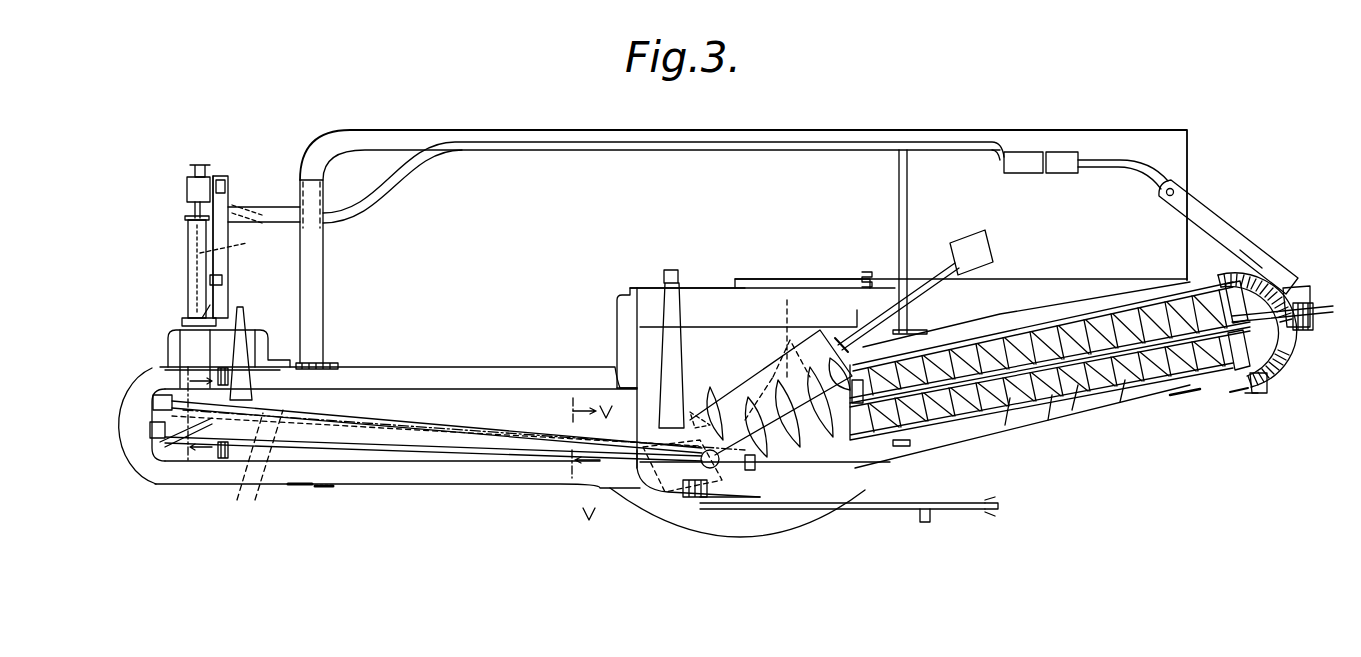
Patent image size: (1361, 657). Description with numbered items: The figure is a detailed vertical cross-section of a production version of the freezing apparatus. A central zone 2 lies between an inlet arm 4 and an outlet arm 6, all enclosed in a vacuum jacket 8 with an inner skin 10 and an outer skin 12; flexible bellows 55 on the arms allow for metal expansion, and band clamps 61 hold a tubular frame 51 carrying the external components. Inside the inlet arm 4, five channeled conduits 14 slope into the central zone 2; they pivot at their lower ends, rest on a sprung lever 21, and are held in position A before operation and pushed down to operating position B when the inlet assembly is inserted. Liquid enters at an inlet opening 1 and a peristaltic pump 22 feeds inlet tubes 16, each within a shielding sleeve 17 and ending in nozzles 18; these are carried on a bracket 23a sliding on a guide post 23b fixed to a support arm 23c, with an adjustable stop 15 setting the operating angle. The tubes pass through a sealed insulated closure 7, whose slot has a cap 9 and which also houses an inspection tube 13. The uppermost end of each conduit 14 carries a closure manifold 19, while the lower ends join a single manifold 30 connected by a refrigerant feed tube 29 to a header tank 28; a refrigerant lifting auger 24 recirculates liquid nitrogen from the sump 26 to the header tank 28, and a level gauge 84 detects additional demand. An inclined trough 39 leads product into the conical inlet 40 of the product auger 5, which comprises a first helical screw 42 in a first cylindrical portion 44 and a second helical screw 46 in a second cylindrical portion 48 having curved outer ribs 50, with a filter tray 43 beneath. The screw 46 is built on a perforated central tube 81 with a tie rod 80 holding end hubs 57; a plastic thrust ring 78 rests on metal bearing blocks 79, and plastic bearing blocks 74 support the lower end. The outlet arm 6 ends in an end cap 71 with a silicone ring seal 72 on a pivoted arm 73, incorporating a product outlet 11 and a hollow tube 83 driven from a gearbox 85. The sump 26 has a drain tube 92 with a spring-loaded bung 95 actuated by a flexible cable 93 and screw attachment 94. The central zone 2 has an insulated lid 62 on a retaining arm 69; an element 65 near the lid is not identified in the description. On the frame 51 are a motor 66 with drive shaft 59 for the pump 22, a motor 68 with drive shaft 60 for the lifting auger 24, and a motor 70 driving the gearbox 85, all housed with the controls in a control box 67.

The inlet opening 1 is at (200, 165).
The central zone 2 is at (712, 340).
The inlet arm 4 is at (207, 495).
The product removal auger 5 is at (1055, 325).
The outlet arm 6 is at (1120, 446).
The sealed insulated closure 7 is at (178, 342).
The vacuum jacket 8 is at (440, 486).
The cap 9 is at (193, 325).
The inner skin 10 is at (500, 463).
The product outlet 11 is at (1254, 400).
The outer skin 12 is at (533, 470).
The inspection tube 13 is at (240, 375).
The channeled conduits 14 is at (250, 487).
The adjustable stop 15 is at (222, 280).
The inlet tubes 16 is at (234, 242).
The shielding sleeve 17 is at (188, 243).
The nozzles 18 is at (204, 318).
The closure manifold 19 is at (150, 395).
The sprung lever 21 is at (153, 470).
The peristaltic pump 22 is at (190, 185).
The bracket 23a is at (228, 178).
The guide post 23b is at (218, 215).
The support arm 23c is at (233, 207).
The refrigerant lifting auger 24 is at (787, 330).
The sump 26 is at (645, 492).
The header tank 28 is at (805, 284).
The refrigerant feed tube 29 is at (683, 482).
The manifold 30 is at (632, 380).
The inclined flat trough 39 is at (716, 402).
The conical inlet portion 40 is at (740, 378).
The first helical screw 42 is at (790, 455).
The filter tray 43 is at (748, 470).
The first cylindrical portion 44 is at (822, 450).
The second helical screw 46 is at (1078, 405).
The second cylindrical portion 48 is at (1130, 422).
The curved outer ribs 50 is at (1110, 310).
The tubular frame 51 is at (510, 140).
The flexible bellows 55 is at (300, 487).
The end hubs 57 is at (1252, 285).
The drive shaft 59 is at (370, 207).
The drive shaft 60 is at (928, 277).
The band clamps 61 is at (330, 489).
The insulated lid 62 is at (690, 288).
The sensor cone 65 is at (670, 270).
The motor 66 is at (1022, 160).
The control box 67 is at (1190, 150).
The motor 68 is at (978, 240).
The retaining arm 69 is at (1118, 160).
The motor 70 is at (1064, 160).
The end cap 71 is at (1284, 370).
The silicone ring seal 72 is at (1212, 262).
The pivoted arm 73 is at (1225, 240).
The plastic bearing blocks 74 is at (865, 455).
The plastic thrust ring 78 is at (1268, 393).
The metal bearing blocks 79 is at (1240, 396).
The tie rod 80 is at (1012, 425).
The perforated central tube 81 is at (1052, 420).
The hollow central tube 83 is at (1322, 305).
The level gauge 84 is at (725, 500).
The gearbox 85 is at (1303, 330).
The drain tube 92 is at (738, 534).
The flexible cable 93 is at (922, 515).
The screw attachment 94 is at (985, 513).
The springloaded bung 95 is at (685, 515).
The position A is at (153, 408).
The position B is at (165, 440).